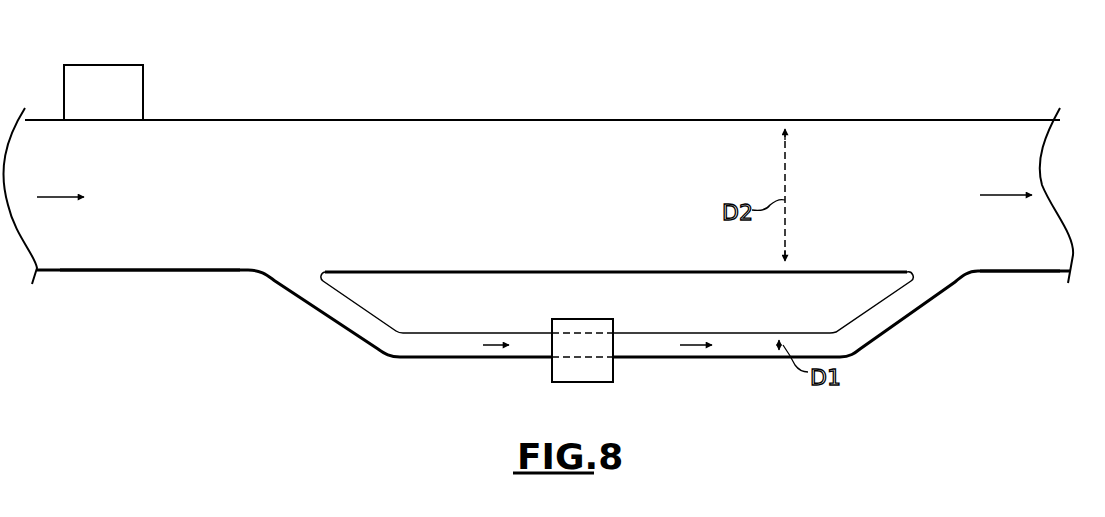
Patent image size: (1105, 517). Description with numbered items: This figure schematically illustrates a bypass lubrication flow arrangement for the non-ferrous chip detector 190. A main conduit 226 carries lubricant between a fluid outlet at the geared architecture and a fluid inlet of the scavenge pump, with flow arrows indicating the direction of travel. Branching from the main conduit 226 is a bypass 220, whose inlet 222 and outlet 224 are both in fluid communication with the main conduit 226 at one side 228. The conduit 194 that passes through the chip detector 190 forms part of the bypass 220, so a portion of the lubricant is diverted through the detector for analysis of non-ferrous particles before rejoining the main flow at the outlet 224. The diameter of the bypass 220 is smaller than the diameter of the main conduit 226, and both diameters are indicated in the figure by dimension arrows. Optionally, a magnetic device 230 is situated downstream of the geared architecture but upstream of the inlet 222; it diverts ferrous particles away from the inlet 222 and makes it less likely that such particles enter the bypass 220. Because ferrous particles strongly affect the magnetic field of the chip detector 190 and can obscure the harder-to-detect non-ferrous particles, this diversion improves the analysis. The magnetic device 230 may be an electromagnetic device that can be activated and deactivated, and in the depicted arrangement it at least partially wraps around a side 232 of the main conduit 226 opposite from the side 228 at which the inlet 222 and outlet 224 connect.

The non-ferrous chip detector 190 is at (580, 318).
The conduit 194 is at (583, 358).
The bypass 220 is at (437, 348).
The inlet 222 is at (304, 262).
The outlet 224 is at (944, 262).
The main conduit 226 is at (468, 128).
The side 228 is at (158, 262).
The magnetic device 230 is at (90, 64).
The side 232 is at (170, 130).